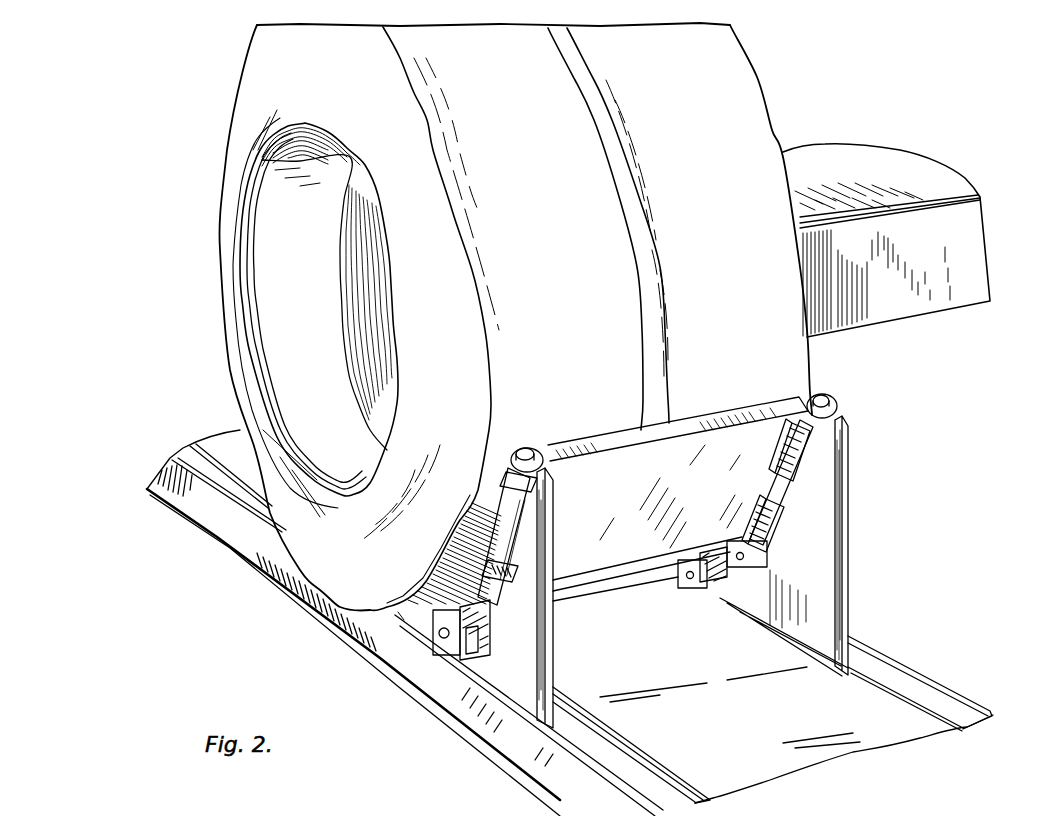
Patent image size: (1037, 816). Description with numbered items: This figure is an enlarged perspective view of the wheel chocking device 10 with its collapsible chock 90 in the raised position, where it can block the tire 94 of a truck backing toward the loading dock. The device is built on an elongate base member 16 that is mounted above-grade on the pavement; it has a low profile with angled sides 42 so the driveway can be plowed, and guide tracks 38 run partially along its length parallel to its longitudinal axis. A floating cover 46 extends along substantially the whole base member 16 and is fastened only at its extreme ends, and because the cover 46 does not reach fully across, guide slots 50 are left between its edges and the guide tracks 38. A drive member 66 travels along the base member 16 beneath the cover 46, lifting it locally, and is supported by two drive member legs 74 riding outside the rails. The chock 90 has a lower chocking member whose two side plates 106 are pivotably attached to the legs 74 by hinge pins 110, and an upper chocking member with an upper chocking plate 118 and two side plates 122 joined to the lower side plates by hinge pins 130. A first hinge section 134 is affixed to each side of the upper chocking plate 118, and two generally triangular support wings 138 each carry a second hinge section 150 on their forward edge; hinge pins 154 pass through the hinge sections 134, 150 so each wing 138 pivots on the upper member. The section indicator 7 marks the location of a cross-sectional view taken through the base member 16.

The wheel chocking device 10 is at (957, 360).
The base member 16 is at (927, 619).
The guide tracks 38 is at (750, 600).
The angled sides 42 is at (393, 653).
The floating cover 46 is at (781, 718).
The guide slots 50 is at (672, 785).
The drive member 66 is at (423, 617).
The drive member legs 74 is at (458, 656).
The collapsible chock 90 is at (857, 423).
The tire 94 is at (245, 70).
The side plates 106 is at (468, 628).
The hinge pins 110 is at (687, 578).
The upper chocking plate 118 is at (697, 469).
The side plates 122 is at (790, 446).
The hinge pins 130 is at (767, 562).
The first hinge section 134 is at (517, 487).
The support wings 138 is at (547, 670).
The second hinge section 150 is at (503, 527).
The hinge pins 154 is at (528, 447).
The section line 7 is at (487, 797).